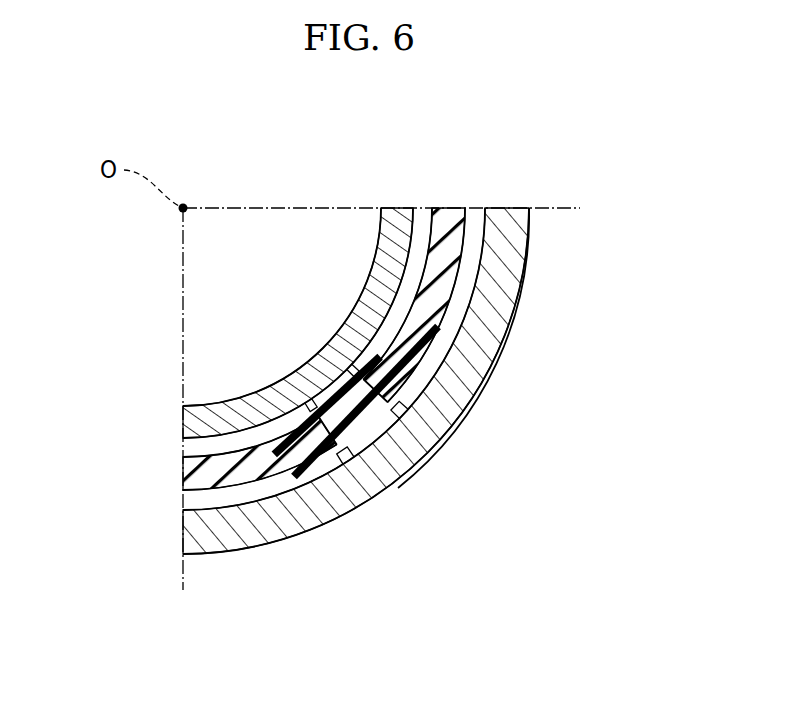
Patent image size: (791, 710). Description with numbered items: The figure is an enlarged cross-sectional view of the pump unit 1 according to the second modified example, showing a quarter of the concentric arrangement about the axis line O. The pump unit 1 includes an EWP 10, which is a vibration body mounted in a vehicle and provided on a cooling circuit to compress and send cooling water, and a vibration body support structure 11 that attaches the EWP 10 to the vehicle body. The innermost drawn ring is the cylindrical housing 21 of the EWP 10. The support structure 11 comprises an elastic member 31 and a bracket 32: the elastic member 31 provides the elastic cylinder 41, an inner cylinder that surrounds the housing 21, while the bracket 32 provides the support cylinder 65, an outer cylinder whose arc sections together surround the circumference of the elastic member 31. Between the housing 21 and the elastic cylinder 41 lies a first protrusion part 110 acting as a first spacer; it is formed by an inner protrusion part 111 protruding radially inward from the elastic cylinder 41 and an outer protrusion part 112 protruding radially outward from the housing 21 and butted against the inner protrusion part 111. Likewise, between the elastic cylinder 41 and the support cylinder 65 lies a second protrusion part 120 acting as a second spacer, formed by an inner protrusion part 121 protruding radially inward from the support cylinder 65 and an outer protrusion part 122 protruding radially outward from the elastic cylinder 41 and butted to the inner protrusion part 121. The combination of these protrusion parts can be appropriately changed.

The pump unit 1 is at (442, 441).
The EWP 10 is at (282, 307).
The vibration body support structure 11 is at (297, 550).
The housing 21 is at (241, 446).
The elastic member 31 is at (307, 332).
The bracket 32 is at (456, 448).
The elastic cylinder 41 is at (484, 234).
The support cylinder 65 is at (384, 381).
The first protrusion part 110 is at (464, 401).
The inner protrusion part 111 is at (381, 381).
The outer protrusion part 112 is at (360, 368).
The second protrusion part 120 is at (423, 430).
The inner protrusion part 121 is at (386, 443).
The outer protrusion part 122 is at (341, 458).